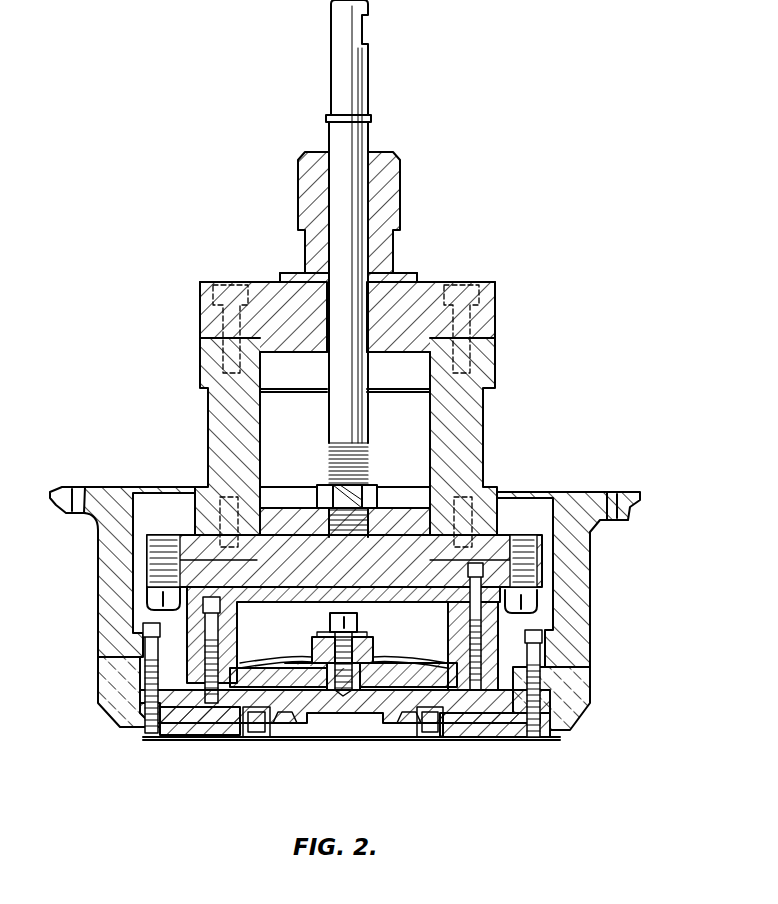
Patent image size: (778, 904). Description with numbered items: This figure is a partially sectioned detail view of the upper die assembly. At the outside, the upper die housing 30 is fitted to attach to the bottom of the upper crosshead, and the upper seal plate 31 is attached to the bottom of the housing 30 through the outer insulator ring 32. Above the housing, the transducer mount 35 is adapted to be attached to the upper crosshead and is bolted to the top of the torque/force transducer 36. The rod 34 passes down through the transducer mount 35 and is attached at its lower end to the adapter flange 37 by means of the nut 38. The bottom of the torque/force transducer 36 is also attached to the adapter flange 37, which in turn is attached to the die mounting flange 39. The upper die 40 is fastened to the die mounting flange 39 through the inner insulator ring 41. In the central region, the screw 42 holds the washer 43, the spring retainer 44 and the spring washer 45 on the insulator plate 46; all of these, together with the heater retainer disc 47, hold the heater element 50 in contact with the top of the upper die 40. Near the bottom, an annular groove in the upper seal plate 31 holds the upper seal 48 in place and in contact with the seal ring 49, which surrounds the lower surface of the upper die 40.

The upper die housing 30 is at (98, 565).
The upper seal plate 31 is at (512, 740).
The outer insulator ring 32 is at (590, 687).
The rod 34 is at (372, 70).
The transducer mount 35 is at (297, 193).
The torque/force transducer 36 is at (483, 428).
The adapter flange 37 is at (305, 507).
The nut 38 is at (367, 487).
The die mounting flange 39 is at (408, 590).
The upper die 40 is at (307, 717).
The inner insulator ring 41 is at (500, 627).
The screw 42 is at (330, 614).
The washer 43 is at (363, 643).
The spring retainer 44 is at (312, 650).
The spring washer 45 is at (387, 660).
The insulator plate 46 is at (253, 667).
The heater retainer disc 47 is at (472, 740).
The upper seal 48 is at (423, 727).
The seal ring 49 is at (257, 738).
The heater element 50 is at (233, 697).